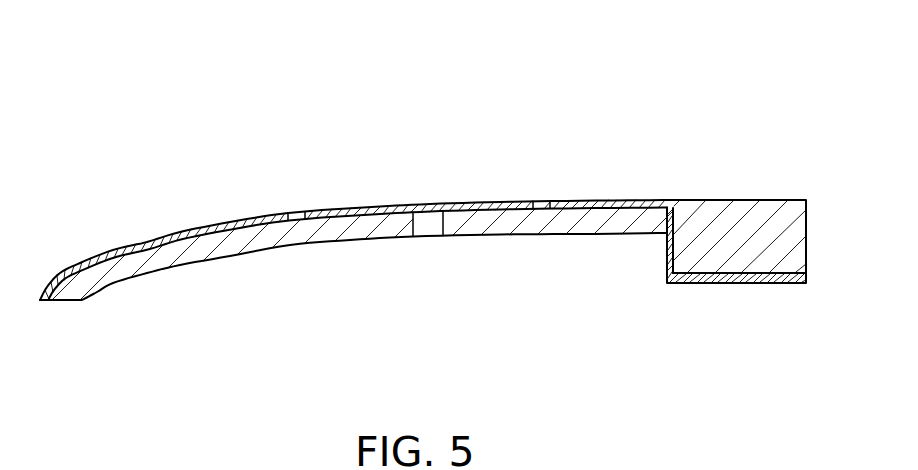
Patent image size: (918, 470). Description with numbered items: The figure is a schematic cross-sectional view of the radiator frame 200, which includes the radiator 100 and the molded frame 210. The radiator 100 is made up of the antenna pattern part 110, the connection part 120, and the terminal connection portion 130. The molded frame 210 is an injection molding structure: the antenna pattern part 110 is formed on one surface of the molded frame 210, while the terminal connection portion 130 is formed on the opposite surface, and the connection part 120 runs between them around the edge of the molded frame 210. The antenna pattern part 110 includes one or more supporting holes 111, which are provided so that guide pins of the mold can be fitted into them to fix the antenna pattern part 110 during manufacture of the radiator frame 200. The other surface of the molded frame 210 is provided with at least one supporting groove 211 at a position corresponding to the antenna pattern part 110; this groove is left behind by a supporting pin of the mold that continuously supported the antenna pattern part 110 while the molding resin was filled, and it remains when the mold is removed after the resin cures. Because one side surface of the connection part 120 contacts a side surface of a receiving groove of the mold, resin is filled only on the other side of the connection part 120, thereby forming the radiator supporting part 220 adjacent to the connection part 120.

The radiator frame 200 is at (187, 46).
The radiator 100 is at (155, 220).
The antenna pattern part 110 is at (338, 207).
The supporting hole 111 is at (538, 203).
The connection part 120 is at (668, 250).
The terminal connection portion 130 is at (745, 278).
The molded frame 210 is at (325, 233).
The supporting groove 211 is at (428, 233).
The radiator supporting part 220 is at (762, 230).